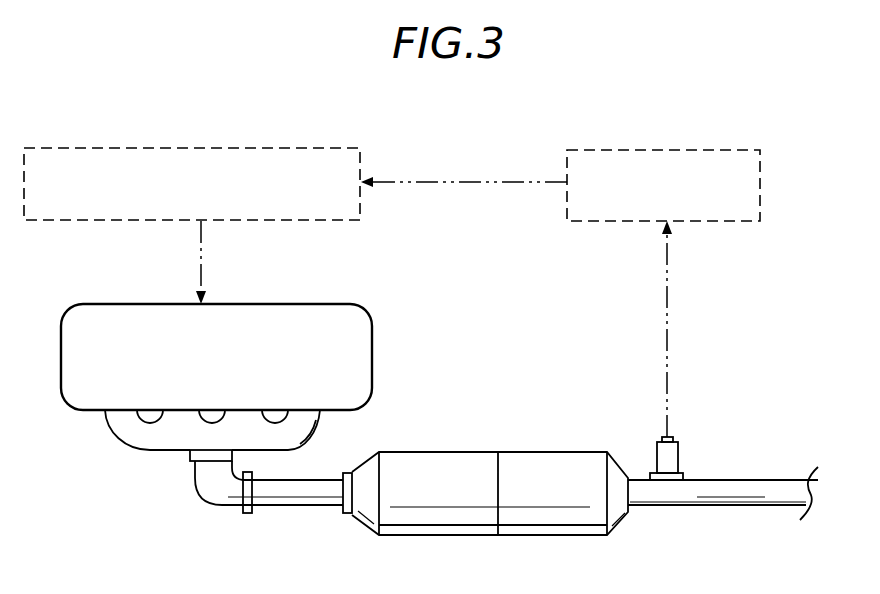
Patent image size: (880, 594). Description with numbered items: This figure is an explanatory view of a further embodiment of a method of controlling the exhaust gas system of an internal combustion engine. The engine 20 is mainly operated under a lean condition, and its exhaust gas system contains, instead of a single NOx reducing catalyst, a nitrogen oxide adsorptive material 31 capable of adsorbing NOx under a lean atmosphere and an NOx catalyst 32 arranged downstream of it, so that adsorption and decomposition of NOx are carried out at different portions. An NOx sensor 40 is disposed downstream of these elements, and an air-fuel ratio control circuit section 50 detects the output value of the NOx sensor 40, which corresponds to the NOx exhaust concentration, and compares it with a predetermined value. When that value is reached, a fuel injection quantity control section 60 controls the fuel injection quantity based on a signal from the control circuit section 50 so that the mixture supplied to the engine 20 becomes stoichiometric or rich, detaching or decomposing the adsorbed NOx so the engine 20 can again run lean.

The engine 20 is at (352, 322).
The nitrogen oxide adsorptive material 31 is at (428, 460).
The NOx catalyst 32 is at (557, 460).
The NOx sensor 40 is at (665, 462).
The air-fuel ratio control circuit section 50 is at (727, 222).
The fuel injection quantity control section 60 is at (294, 221).